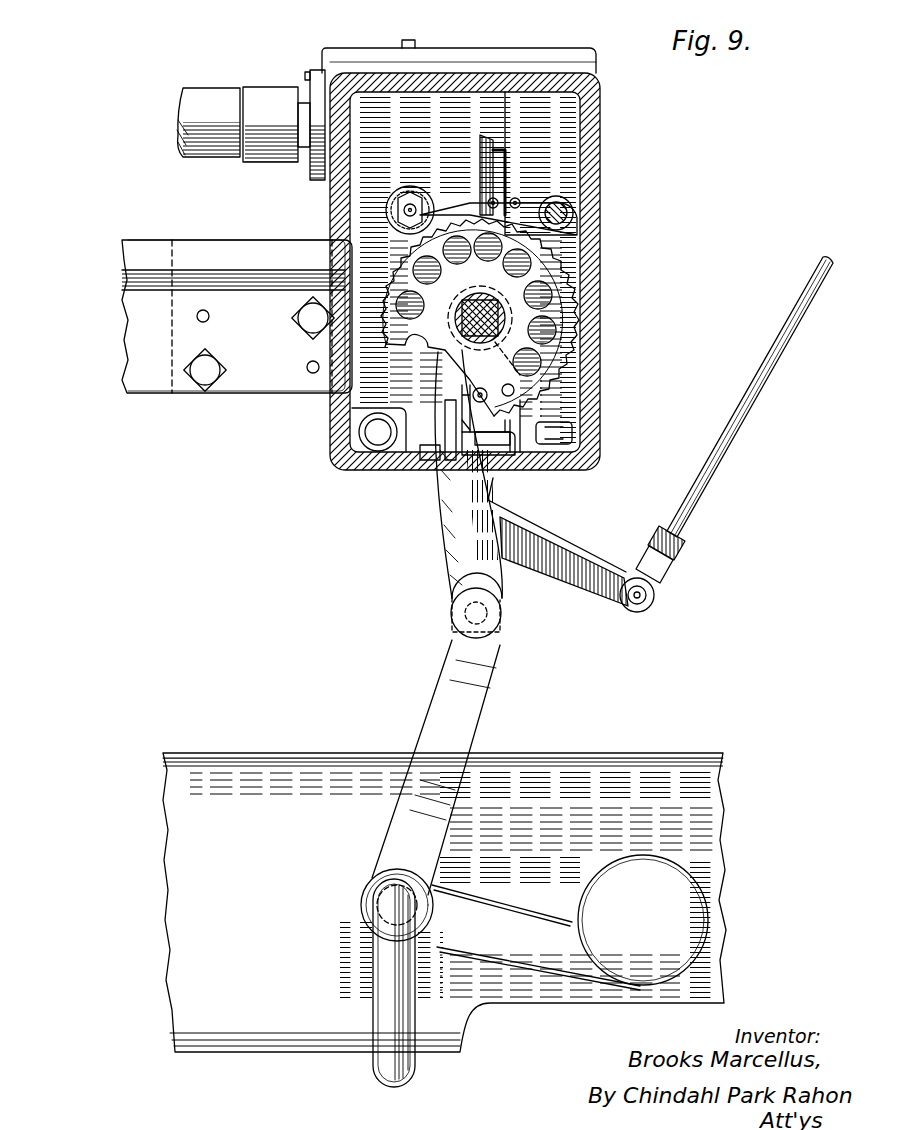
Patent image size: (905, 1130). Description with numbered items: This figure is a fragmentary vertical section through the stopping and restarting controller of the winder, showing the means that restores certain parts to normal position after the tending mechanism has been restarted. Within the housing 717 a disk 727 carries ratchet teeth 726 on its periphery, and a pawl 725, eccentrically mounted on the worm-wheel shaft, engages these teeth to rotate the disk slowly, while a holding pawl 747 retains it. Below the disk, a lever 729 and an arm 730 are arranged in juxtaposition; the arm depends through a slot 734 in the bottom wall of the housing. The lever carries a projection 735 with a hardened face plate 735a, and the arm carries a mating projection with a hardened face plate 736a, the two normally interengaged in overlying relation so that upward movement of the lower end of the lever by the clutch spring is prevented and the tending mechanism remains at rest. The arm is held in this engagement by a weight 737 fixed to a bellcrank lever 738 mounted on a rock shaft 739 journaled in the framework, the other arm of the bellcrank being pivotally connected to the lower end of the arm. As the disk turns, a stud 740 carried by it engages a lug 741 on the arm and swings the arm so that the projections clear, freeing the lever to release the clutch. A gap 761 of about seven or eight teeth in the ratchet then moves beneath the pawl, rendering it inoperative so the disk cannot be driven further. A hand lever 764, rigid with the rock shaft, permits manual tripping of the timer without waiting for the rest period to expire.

The housing 717 is at (600, 128).
The holding pawl 747 is at (515, 198).
The pawl 725 is at (441, 199).
The gap 761 is at (486, 208).
The ratchet teeth 726 is at (513, 317).
The disk 727 is at (558, 293).
The lug 741 is at (466, 394).
The stud 740 is at (460, 422).
The hardened face plate 736a is at (428, 455).
The slot 734 is at (450, 430).
The hardened face plate 735a is at (468, 428).
The projection 735 is at (505, 460).
The arm 730 is at (453, 528).
The lever 729 is at (540, 505).
The weight 737 is at (570, 922).
The bellcrank lever 738 is at (360, 908).
The rock shaft 739 is at (397, 893).
The hand lever 764 is at (380, 990).